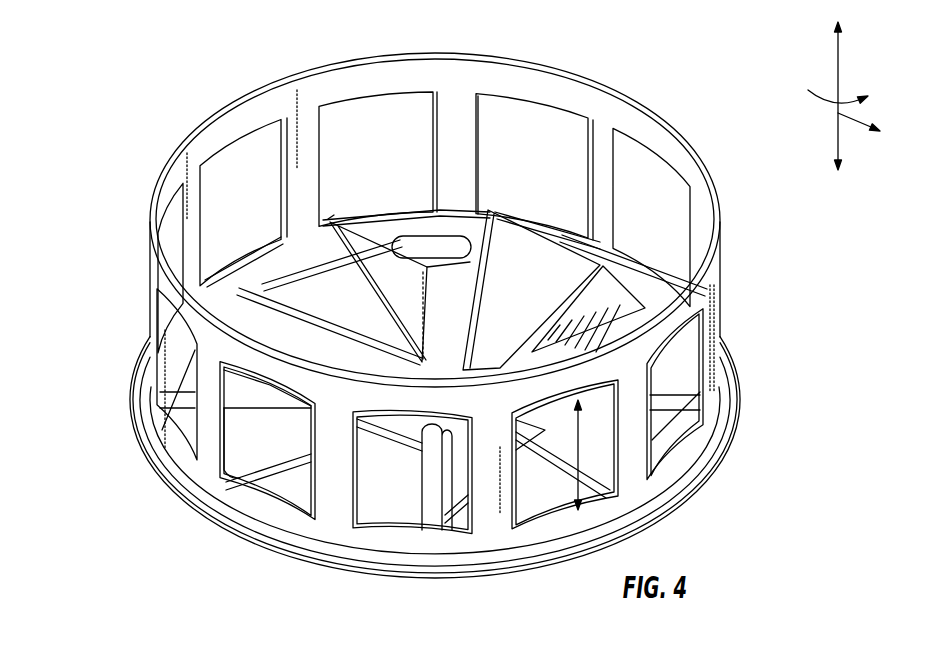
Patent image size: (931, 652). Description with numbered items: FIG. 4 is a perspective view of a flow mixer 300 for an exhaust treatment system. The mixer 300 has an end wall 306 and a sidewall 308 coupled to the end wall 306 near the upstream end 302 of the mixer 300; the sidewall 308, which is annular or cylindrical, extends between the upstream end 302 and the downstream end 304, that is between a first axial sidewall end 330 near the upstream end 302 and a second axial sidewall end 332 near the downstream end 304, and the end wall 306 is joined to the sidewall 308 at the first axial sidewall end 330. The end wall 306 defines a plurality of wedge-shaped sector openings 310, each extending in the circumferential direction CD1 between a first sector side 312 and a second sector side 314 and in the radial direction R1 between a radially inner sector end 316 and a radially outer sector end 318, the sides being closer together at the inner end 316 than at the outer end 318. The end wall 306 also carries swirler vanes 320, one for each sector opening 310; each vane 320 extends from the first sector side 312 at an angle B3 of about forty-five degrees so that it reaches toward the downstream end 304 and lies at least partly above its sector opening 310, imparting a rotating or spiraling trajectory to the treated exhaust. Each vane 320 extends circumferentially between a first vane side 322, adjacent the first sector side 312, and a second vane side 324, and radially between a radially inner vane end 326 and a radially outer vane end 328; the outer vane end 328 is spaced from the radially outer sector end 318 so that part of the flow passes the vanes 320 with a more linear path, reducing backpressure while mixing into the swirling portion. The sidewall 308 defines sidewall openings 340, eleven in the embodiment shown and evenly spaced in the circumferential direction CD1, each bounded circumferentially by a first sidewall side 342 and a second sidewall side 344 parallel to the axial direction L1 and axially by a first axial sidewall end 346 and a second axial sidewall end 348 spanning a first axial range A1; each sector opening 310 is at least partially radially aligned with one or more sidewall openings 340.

The flow mixer 300 is at (78, 118).
The upstream end 302 is at (735, 395).
The downstream end 304 is at (615, 90).
The end wall 306 is at (265, 548).
The sidewall 308 is at (146, 275).
The sector openings 310 is at (296, 258).
The first sector side 312 is at (418, 237).
The second sector side 314 is at (292, 305).
The radially inner sector end 316 is at (405, 345).
The radially outer sector end 318 is at (331, 220).
The swirler vanes 320 is at (598, 281).
The first vane side 322 is at (497, 360).
The second vane side 324 is at (481, 291).
The radially inner vane end 326 is at (412, 460).
The radially outer vane end 328 is at (549, 465).
The first axial sidewall end 330 is at (713, 440).
The second axial sidewall end 332 is at (435, 219).
The sidewall openings 340 is at (337, 98).
The first sidewall side 342 is at (240, 472).
The second sidewall side 344 is at (307, 418).
The first axial sidewall end 346 is at (240, 492).
The second axial sidewall end 348 is at (257, 382).
The first axial range A1 is at (582, 460).
The angle B3 is at (373, 342).
The axial direction L1 is at (840, 62).
The circumferential direction CD1 is at (808, 90).
The radial direction R1 is at (852, 127).